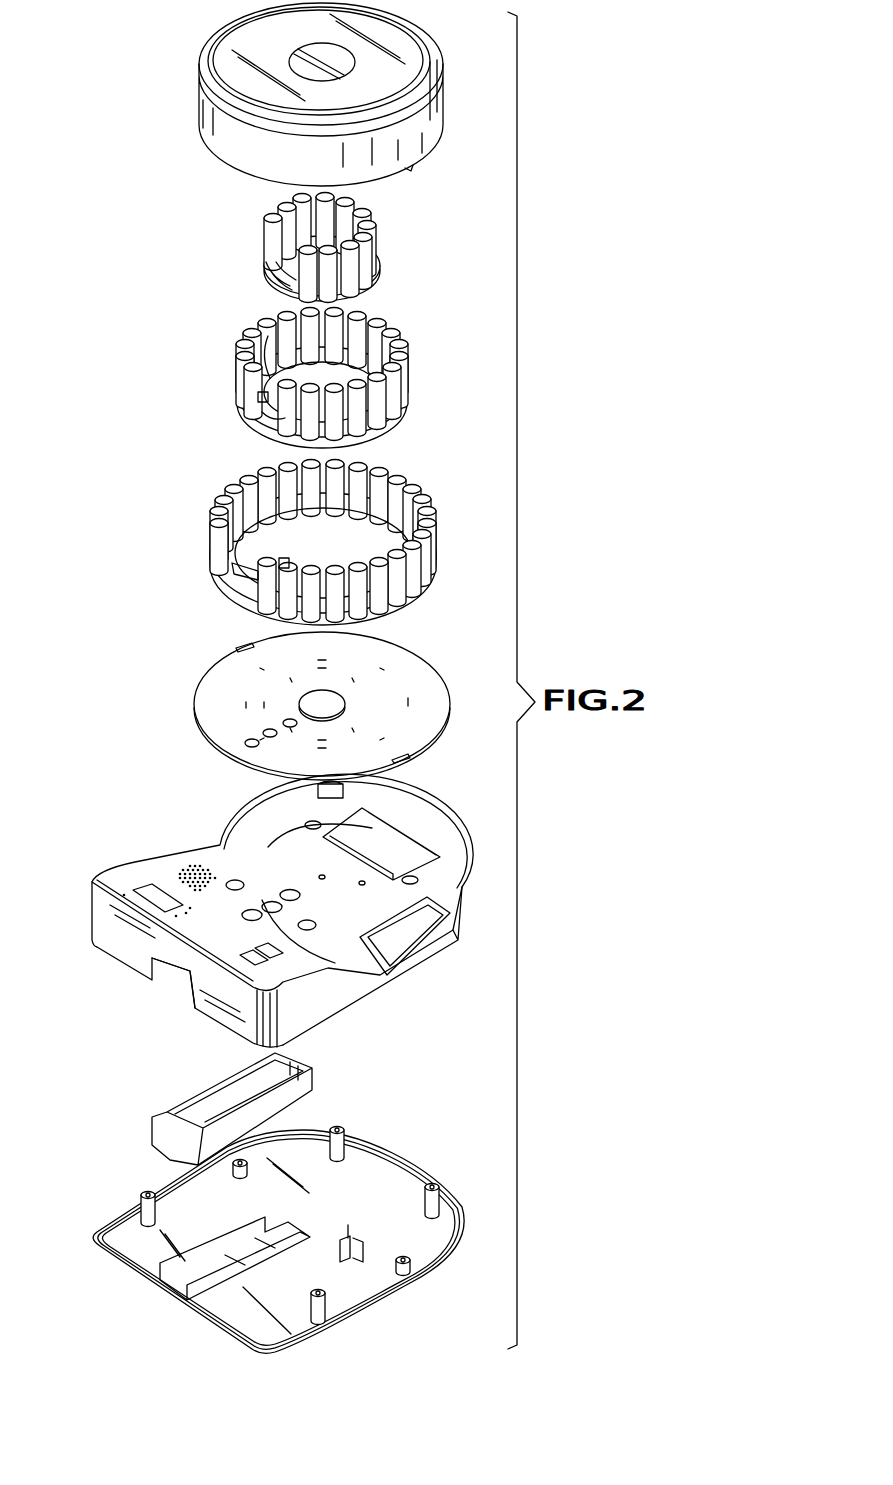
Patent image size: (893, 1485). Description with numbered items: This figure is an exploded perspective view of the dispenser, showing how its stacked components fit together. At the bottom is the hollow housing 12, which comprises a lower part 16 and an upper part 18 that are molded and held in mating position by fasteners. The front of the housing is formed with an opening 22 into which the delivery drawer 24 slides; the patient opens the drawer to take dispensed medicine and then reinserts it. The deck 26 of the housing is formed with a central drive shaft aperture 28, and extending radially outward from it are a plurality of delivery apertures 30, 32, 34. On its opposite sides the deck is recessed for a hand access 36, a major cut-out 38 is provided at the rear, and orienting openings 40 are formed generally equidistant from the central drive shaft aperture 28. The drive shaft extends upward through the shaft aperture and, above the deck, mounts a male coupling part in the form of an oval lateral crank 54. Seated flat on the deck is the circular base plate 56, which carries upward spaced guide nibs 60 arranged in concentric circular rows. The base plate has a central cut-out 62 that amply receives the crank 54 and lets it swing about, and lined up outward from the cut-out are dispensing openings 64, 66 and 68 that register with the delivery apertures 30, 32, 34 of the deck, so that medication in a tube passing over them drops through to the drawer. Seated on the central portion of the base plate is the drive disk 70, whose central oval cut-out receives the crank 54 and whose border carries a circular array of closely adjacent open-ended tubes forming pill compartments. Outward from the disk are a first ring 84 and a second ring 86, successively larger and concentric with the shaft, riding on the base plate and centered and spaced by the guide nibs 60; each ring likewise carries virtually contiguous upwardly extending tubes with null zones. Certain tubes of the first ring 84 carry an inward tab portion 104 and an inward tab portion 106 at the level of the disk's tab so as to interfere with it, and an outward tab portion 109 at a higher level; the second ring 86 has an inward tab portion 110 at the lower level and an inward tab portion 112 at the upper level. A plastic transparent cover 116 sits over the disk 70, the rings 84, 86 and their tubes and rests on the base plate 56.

The plastic transparent cover 116 is at (410, 36).
The drive disk 70 is at (377, 277).
The first ring 84 is at (403, 400).
The second ring 86 is at (433, 570).
The inward tab portion 106 is at (272, 350).
The inward tab portion 104 is at (258, 393).
The outward tab portion 109 is at (280, 408).
The inward tab portion 112 is at (282, 560).
The inward tab portion 110 is at (257, 572).
The circular base plate 56 is at (331, 706).
The central cut-out 62 is at (340, 692).
The guide nibs 60 is at (410, 702).
The dispensing opening 64 is at (288, 720).
The dispensing opening 66 is at (277, 727).
The dispensing opening 68 is at (247, 743).
The oval lateral crank 54 is at (343, 793).
The housing 12 is at (256, 1017).
The upper part 18 is at (97, 910).
The opening 22 is at (170, 982).
The major cut-out 38 is at (400, 830).
The hand access 36 is at (405, 943).
The orienting openings 40 is at (240, 882).
The central drive shaft aperture 28 is at (318, 875).
The delivery aperture 30 is at (288, 891).
The deck 26 is at (360, 884).
The delivery aperture 34 is at (247, 919).
The delivery aperture 32 is at (276, 911).
The delivery drawer 24 is at (200, 1093).
The lower part 16 is at (92, 1243).